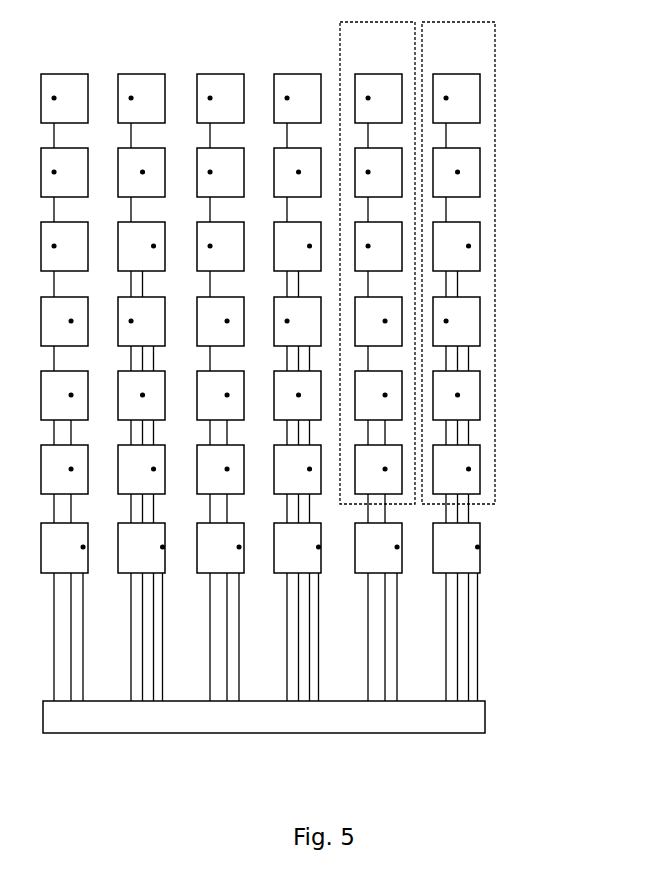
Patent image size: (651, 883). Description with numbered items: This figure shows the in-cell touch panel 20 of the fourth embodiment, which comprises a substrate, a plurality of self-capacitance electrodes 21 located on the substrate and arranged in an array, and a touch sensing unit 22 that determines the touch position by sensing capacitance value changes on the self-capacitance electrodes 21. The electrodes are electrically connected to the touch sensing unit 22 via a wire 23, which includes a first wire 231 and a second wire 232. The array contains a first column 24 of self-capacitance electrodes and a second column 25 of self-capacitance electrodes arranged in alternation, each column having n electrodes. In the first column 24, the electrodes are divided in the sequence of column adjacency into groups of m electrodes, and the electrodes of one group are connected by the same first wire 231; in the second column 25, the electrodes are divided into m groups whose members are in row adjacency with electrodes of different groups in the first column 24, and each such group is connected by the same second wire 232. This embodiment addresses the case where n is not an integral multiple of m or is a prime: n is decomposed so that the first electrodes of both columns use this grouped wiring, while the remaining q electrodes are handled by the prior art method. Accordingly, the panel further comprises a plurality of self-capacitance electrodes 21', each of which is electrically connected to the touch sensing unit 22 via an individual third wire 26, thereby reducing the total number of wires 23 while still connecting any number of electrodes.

The in-cell touch panel 20 is at (313, 413).
The self-capacitance electrode 21 is at (490, 318).
The self-capacitance electrode 21' is at (494, 548).
The touch sensing unit 22 is at (486, 703).
The wire 23 is at (477, 637).
The first wire 231 is at (385, 629).
The second wire 232 is at (446, 668).
The first column of self-capacitance electrodes 24 is at (377, 263).
The second column of self-capacitance electrodes 25 is at (458, 263).
The third wire 26 is at (478, 584).